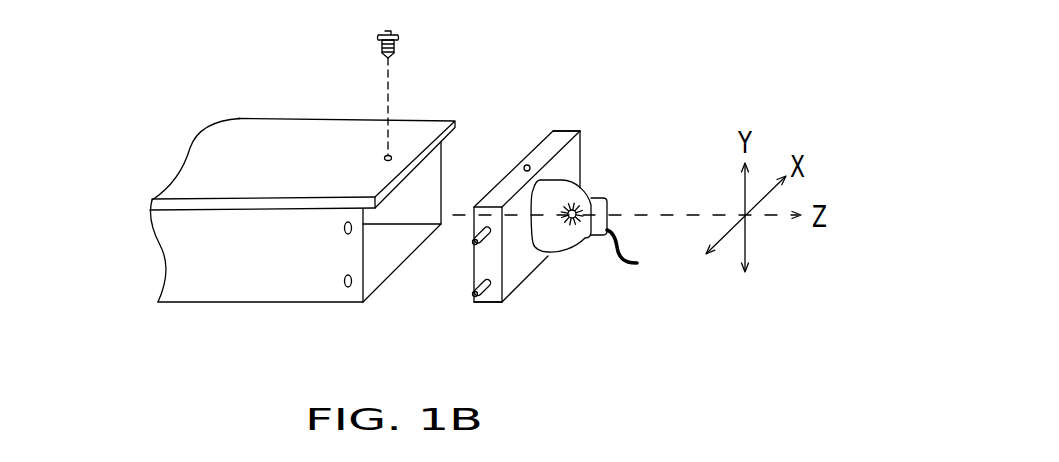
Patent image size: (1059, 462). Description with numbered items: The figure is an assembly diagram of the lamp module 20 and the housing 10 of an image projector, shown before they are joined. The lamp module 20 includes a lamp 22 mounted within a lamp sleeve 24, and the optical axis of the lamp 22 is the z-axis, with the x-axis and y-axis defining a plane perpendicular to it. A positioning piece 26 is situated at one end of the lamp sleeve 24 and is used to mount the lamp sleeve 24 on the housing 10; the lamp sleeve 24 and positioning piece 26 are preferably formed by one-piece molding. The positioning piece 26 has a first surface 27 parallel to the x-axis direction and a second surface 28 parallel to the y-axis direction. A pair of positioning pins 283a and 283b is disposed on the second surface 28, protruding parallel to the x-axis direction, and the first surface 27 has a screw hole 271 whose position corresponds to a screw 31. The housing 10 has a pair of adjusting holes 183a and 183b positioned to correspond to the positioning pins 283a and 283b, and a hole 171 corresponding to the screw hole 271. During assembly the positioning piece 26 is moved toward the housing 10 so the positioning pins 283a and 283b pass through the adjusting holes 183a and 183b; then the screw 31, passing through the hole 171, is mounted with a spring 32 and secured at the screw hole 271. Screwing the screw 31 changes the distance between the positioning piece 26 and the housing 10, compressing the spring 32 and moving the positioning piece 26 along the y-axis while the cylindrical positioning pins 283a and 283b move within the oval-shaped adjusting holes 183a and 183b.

The housing 10 is at (184, 150).
The hole 171 is at (386, 156).
The adjusting hole 183a is at (343, 231).
The adjusting hole 183b is at (345, 282).
The lamp module 20 is at (541, 206).
The lamp 22 is at (575, 199).
The lamp sleeve 24 is at (568, 254).
The positioning piece 26 is at (529, 217).
The first surface 27 is at (562, 131).
The screw hole 271 is at (524, 166).
The second surface 28 is at (492, 303).
The positioning pin 283a is at (472, 243).
The positioning pin 283b is at (473, 295).
The screw 31 is at (422, 31).
The spring 32 is at (397, 48).